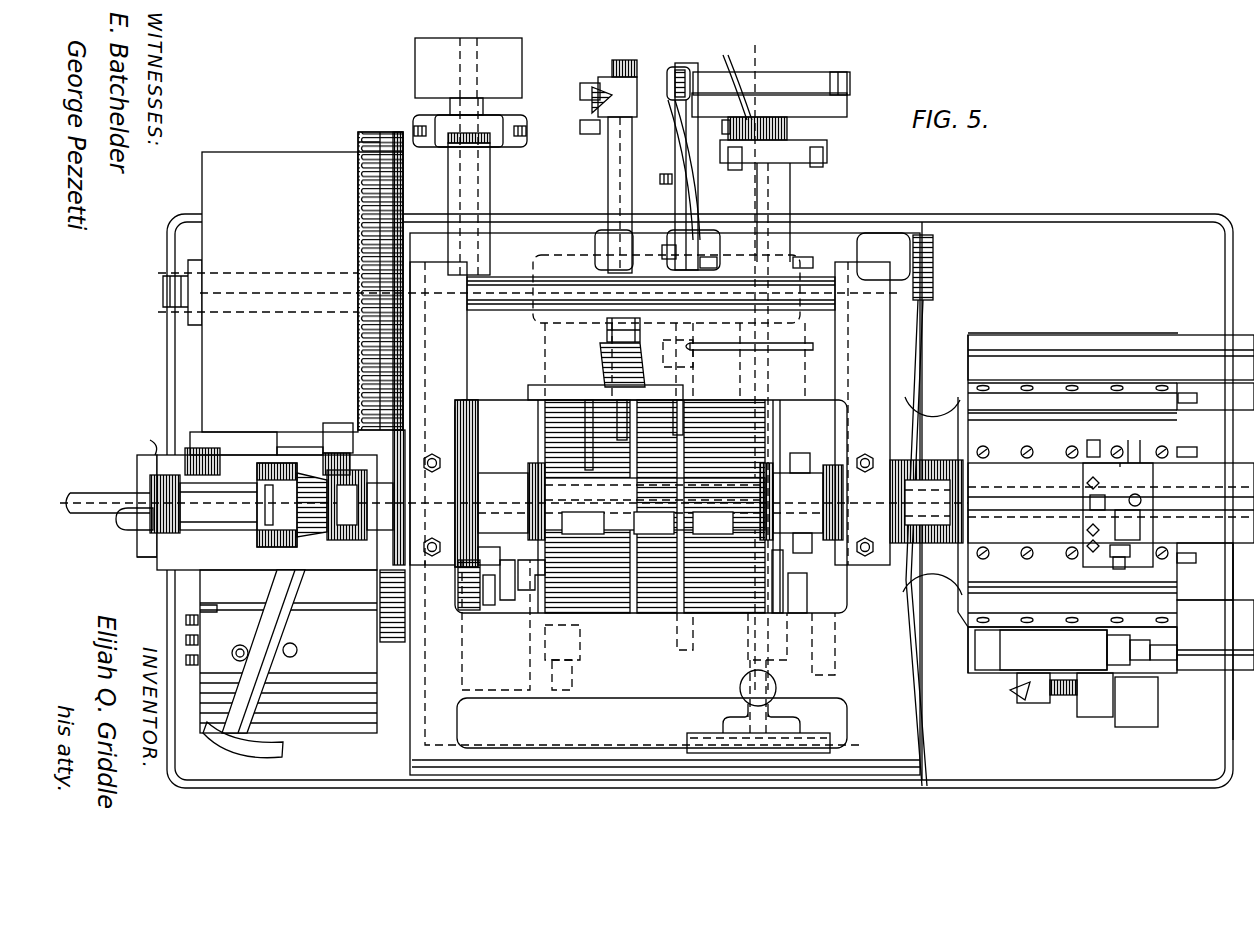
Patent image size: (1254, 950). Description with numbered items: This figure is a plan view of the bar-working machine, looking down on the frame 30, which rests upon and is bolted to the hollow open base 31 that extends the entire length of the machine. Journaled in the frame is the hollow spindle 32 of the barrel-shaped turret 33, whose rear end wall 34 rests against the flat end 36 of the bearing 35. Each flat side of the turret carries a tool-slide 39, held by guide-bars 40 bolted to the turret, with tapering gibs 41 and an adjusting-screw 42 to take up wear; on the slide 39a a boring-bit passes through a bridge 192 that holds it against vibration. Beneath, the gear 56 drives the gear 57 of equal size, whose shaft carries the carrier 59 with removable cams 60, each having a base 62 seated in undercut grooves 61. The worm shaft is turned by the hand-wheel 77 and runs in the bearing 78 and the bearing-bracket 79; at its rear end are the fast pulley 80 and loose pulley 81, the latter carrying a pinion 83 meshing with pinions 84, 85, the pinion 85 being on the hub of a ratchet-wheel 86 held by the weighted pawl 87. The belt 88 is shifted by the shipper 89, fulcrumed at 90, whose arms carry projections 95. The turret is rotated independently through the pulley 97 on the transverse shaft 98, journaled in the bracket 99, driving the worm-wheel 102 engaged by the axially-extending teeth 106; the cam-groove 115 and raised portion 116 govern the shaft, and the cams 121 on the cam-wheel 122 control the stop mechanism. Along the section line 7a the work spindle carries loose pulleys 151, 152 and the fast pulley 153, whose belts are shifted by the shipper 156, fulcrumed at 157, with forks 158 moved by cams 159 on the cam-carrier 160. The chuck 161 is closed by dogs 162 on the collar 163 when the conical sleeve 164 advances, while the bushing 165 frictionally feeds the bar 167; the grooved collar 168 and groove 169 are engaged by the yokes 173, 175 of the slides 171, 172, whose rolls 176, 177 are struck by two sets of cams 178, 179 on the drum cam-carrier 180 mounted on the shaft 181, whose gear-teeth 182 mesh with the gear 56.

The section line 7a 7a is at (749, 357).
The frame 30 is at (913, 337).
The hollow open base 31 is at (1018, 218).
The hollow spindle 32 is at (497, 485).
The barrel-shaped turret 33 is at (965, 397).
The rear end wall 34 is at (1182, 355).
The bearing 35 is at (937, 567).
The flat end of bearing 36 is at (966, 622).
The tool-slide 39 is at (1213, 370).
The tool-slide 39a is at (1210, 640).
The guide-bars 40 is at (1050, 383).
The tapering gibs 41 is at (1149, 517).
The adjusting-screw 42 is at (1151, 520).
The larger gear 56 is at (388, 130).
The gear 57 is at (393, 645).
The carrier 59 is at (338, 712).
The cams 60 is at (283, 600).
The parallel grooves 61 is at (217, 608).
The base 62 is at (290, 634).
The hand-wheel 77 is at (815, 745).
The bearing 78 is at (770, 689).
The bearing-bracket 79 is at (767, 197).
The belt-pulley 80 is at (783, 75).
The belt-pulley 81 is at (833, 104).
The pinion 83 is at (731, 77).
The pinion 84 is at (775, 127).
The pinion 85 is at (716, 130).
The ratchet-wheel 86 is at (745, 150).
The weighted pawl 87 is at (820, 142).
The belt 88 is at (848, 80).
The shipper 89 is at (685, 140).
The fulcrum 90 is at (660, 180).
The pin or projection 95 is at (700, 87).
The pulley 97 is at (437, 68).
The transverse shaft 98 is at (472, 410).
The bracket 99 is at (472, 190).
The worm-wheel 102 is at (462, 605).
The axially-extending teeth 106 is at (492, 600).
The cam-groove 115 is at (522, 571).
The raised portion 116 is at (497, 557).
The cams 121 is at (603, 664).
The carrier or cam-wheel 122 is at (595, 632).
The loose pulley 151 is at (615, 523).
The loose pulley 152 is at (745, 520).
The fast pulley 153 is at (655, 506).
The shipper 156 is at (612, 372).
The fulcrum 157 is at (607, 328).
The forks 158 is at (585, 424).
The cams 159 is at (628, 60).
The cam-carrier 160 is at (615, 157).
The chuck 161 is at (933, 470).
The dogs 162 is at (280, 500).
The collar 163 is at (280, 548).
The conical sleeve 164 is at (313, 473).
The bushing 165 is at (220, 510).
The bar or work 167 is at (90, 493).
The grooved collar 168 is at (147, 480).
The groove 169 is at (352, 487).
The slide 171 is at (177, 553).
The slide 172 is at (152, 455).
The yoke 173 is at (355, 540).
The yoke 175 is at (125, 527).
The roll 176 is at (341, 440).
The roll 177 is at (199, 431).
The cams 178 is at (233, 432).
The cams 179 is at (341, 414).
The cam-carrier 180 is at (225, 207).
The shaft 181 is at (505, 300).
The gear-teeth 182 is at (368, 152).
The bridge 192 is at (1030, 680).